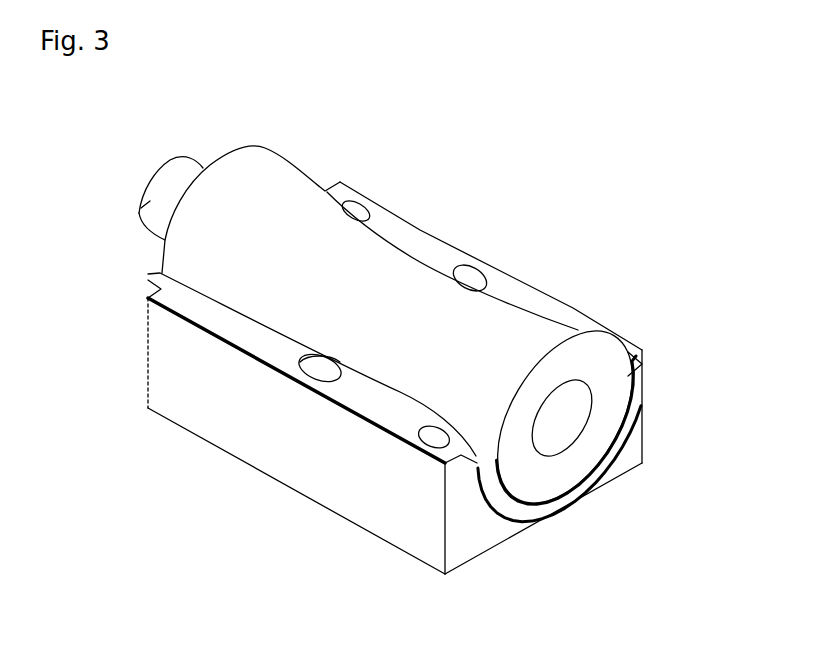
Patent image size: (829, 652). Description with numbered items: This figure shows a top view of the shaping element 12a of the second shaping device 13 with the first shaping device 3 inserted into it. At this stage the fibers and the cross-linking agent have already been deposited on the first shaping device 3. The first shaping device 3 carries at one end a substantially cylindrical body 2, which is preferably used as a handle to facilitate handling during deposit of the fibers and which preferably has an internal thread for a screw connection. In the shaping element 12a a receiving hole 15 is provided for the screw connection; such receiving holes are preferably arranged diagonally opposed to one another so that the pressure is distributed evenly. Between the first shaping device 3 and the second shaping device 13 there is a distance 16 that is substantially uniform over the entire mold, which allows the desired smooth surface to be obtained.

The cylindrical body 2 is at (138, 223).
The first shaping device 3 is at (548, 328).
The shaping element 12a is at (445, 191).
The second shaping device 13 is at (438, 248).
The receiving hole 15 is at (318, 368).
The distance between the first and second shaping device 16 is at (522, 505).